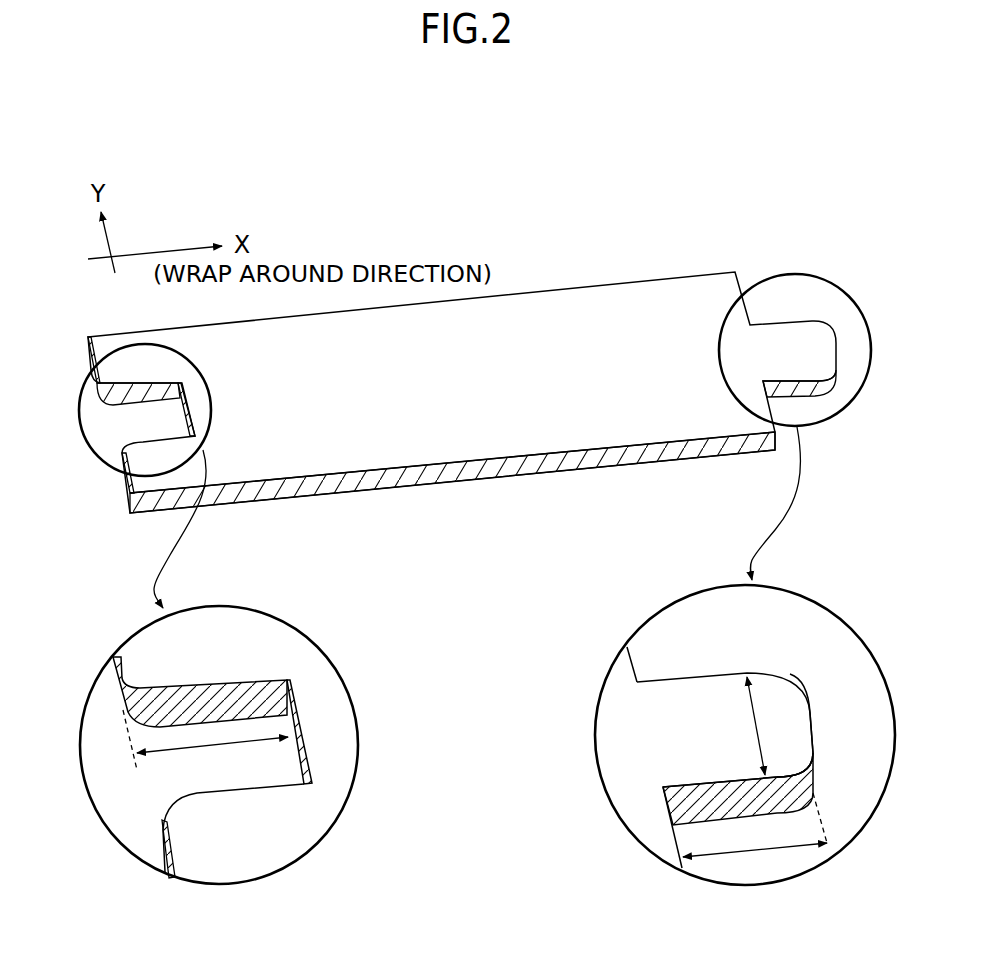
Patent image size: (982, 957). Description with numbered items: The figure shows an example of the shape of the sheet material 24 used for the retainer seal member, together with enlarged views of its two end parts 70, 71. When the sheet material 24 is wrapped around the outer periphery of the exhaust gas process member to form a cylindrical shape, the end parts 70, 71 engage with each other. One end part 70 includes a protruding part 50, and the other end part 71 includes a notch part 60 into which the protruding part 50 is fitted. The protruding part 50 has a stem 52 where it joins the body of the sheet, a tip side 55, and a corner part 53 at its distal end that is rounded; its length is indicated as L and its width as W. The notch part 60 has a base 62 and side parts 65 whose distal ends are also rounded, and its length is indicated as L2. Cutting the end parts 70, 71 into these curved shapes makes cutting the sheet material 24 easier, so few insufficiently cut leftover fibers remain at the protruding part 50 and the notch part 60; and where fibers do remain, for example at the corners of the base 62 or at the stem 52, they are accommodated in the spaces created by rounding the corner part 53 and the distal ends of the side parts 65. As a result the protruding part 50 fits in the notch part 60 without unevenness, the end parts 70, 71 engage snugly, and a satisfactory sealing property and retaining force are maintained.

The sheet material 24 is at (479, 188).
The end part 70 is at (758, 277).
The end part 71 is at (108, 486).
The protruding part 50 is at (702, 703).
The stem 52 is at (633, 684).
The corner part 53 is at (791, 676).
The tip side of tab 55 is at (810, 720).
The notch part 60 is at (185, 783).
The base 62 is at (300, 728).
The side part 65 is at (207, 686).